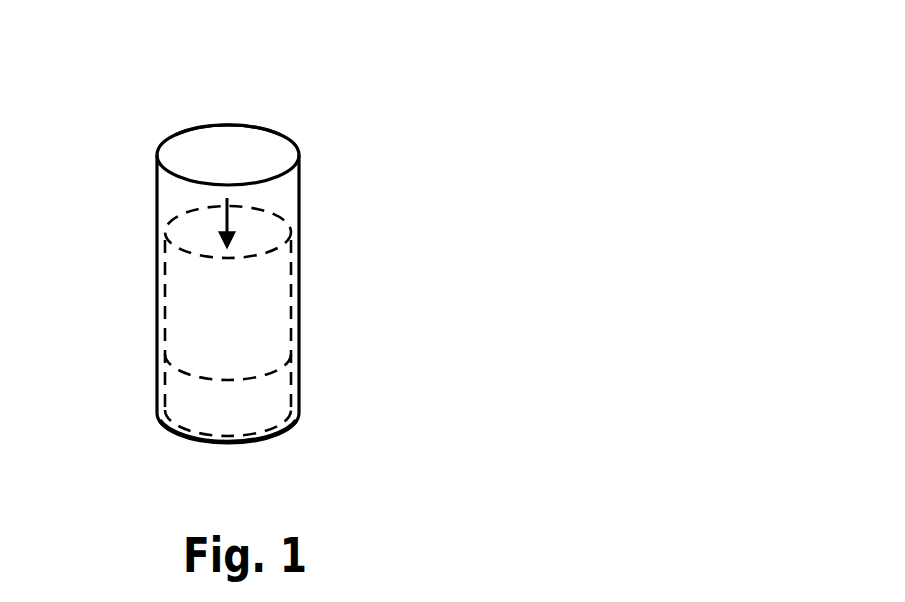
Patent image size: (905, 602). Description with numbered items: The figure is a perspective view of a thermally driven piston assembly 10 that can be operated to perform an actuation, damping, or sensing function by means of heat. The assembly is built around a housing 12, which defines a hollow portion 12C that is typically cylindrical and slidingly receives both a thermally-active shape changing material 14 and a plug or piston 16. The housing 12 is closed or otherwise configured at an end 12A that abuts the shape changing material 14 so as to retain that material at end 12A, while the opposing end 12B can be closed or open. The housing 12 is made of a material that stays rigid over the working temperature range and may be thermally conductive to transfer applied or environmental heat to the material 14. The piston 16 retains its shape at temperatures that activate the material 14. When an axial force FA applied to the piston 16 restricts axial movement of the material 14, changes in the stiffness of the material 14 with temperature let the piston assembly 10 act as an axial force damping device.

The thermally driven piston assembly 10 is at (508, 38).
The housing 12 is at (179, 299).
The end 12A is at (268, 461).
The opposing end 12B is at (274, 133).
The hollow portion 12C is at (171, 120).
The thermally-active shape changing material 14 is at (174, 432).
The piston 16 is at (174, 307).
The axial force FA is at (316, 205).